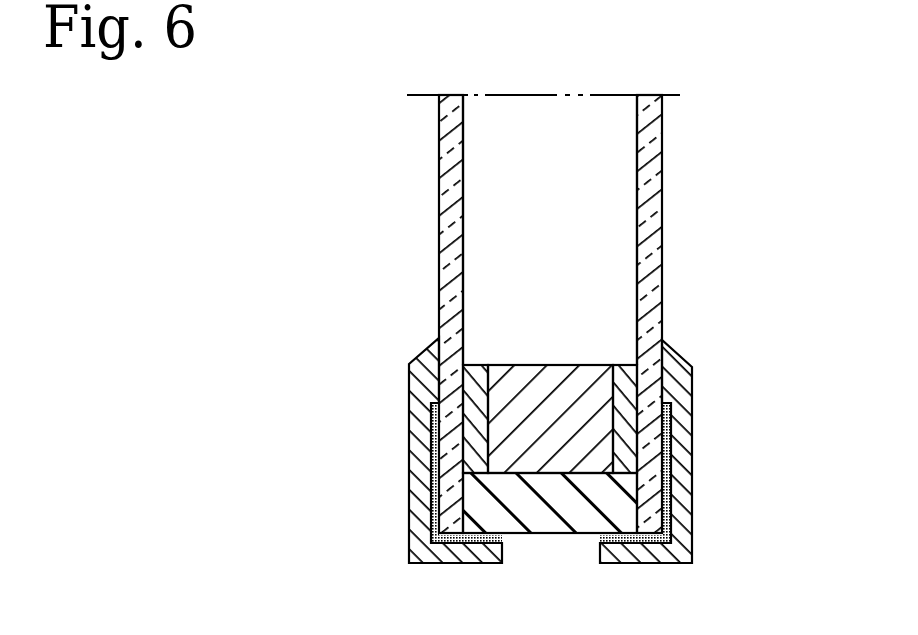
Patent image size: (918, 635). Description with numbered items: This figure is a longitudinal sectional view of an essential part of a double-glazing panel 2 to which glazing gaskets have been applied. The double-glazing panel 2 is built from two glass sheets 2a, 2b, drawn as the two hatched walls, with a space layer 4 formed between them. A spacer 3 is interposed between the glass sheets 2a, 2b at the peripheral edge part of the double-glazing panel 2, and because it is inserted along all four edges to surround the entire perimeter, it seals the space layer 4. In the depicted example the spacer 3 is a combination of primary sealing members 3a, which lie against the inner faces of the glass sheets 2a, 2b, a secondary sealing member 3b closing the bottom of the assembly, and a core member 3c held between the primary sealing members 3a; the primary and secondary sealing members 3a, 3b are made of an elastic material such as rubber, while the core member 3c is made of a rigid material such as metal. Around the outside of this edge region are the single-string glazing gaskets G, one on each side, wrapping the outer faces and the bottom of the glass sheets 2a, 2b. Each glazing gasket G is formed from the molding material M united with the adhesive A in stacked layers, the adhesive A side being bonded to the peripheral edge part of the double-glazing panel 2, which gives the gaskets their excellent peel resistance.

The double-glazing panel 2 is at (565, 314).
The glass sheet 2a is at (450, 157).
The glass sheet 2b is at (653, 197).
The spacer 3 is at (562, 449).
The primary sealing member 3a is at (472, 401).
The secondary sealing member 3b is at (614, 503).
The core member 3c is at (598, 437).
The space layer 4 is at (640, 268).
The glazing gasket G is at (400, 496).
The molding material M is at (412, 536).
The adhesive A is at (452, 563).